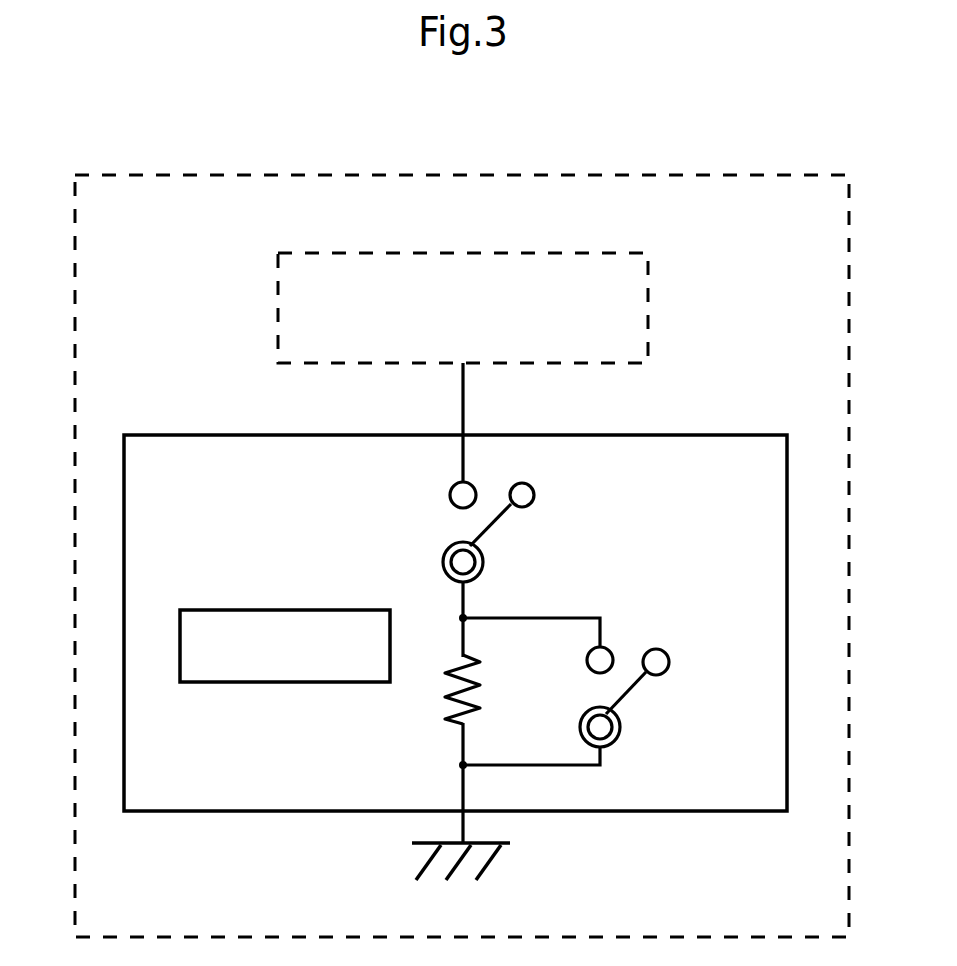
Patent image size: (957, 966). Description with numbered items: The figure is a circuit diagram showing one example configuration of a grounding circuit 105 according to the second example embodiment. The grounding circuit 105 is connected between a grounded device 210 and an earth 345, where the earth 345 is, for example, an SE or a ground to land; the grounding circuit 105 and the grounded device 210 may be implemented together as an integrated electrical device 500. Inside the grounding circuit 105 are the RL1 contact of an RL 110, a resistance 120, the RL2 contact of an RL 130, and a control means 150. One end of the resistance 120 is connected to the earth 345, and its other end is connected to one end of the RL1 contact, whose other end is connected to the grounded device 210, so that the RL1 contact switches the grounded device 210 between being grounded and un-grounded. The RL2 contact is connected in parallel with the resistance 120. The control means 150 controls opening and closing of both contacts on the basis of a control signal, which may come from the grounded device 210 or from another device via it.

The electrical device 500 is at (530, 173).
The grounded device 210 is at (278, 288).
The grounding circuit 105 is at (714, 434).
The RL 110 is at (444, 524).
The resistance 120 is at (438, 708).
The RL 130 is at (640, 698).
The control means 150 is at (229, 610).
The earth 345 is at (405, 858).